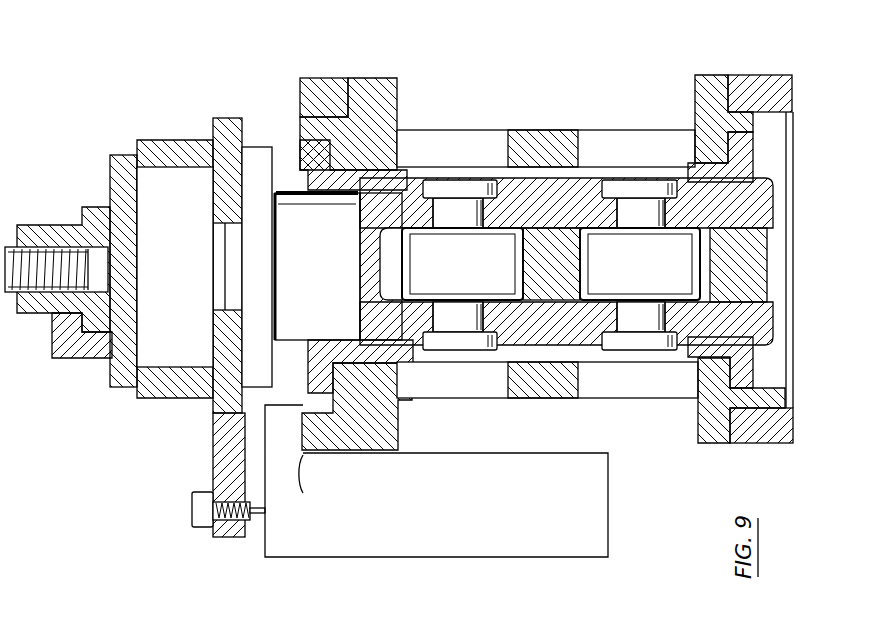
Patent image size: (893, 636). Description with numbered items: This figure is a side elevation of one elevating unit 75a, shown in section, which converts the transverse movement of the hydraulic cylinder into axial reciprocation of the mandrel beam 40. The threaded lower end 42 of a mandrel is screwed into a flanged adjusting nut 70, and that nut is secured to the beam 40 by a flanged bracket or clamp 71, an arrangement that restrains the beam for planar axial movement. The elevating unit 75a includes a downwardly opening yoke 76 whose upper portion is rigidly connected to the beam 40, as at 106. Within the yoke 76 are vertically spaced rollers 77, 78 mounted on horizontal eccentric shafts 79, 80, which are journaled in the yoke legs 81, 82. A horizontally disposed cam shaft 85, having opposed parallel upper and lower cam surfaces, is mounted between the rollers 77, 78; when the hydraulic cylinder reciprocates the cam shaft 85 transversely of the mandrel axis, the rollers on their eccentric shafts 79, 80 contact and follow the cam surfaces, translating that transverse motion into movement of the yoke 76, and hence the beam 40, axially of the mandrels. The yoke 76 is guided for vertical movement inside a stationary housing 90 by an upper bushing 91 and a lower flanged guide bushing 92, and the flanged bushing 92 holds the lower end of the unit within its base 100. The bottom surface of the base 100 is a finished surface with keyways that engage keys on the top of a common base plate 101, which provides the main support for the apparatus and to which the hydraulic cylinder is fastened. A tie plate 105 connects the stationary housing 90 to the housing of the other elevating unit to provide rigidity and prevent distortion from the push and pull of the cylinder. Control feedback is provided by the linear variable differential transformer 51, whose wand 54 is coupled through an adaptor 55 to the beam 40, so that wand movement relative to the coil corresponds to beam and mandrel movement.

The beam 40 is at (122, 208).
The lower end of mandrel 42 is at (35, 247).
The linear variable differential transformer 51 is at (340, 553).
The wand 54 is at (260, 516).
The adaptor 55 is at (205, 525).
The flanged adjusting nut 70 is at (68, 228).
The flanged bracket or clamp 71 is at (82, 357).
The elevating unit 75a is at (517, 104).
The yoke 76 is at (329, 255).
The roller 77 is at (466, 252).
The roller 78 is at (644, 252).
The eccentric shaft 79 is at (458, 206).
The eccentric shaft 80 is at (643, 206).
The yoke leg 81 is at (760, 200).
The yoke leg 82 is at (757, 320).
The cam shaft 85 is at (560, 245).
The stationary housing 90 is at (373, 90).
The upper bushing 91 is at (315, 157).
The lower flanged guide bushing 92 is at (745, 165).
The base 100 is at (705, 86).
The base plate 101 is at (755, 86).
The tie plate 105 is at (323, 90).
The rigid connection 106 is at (255, 157).